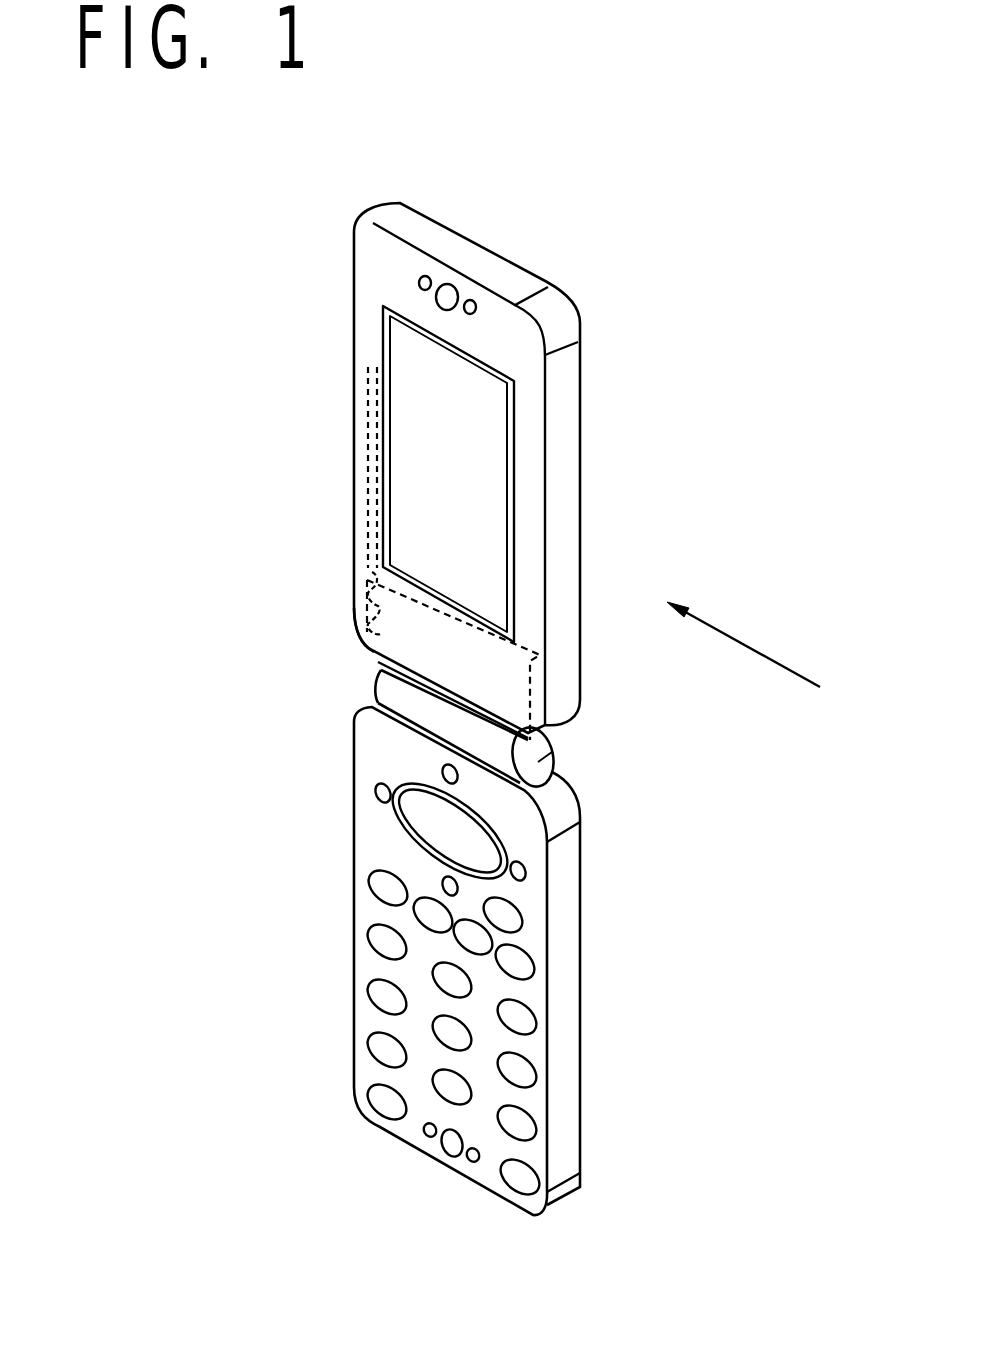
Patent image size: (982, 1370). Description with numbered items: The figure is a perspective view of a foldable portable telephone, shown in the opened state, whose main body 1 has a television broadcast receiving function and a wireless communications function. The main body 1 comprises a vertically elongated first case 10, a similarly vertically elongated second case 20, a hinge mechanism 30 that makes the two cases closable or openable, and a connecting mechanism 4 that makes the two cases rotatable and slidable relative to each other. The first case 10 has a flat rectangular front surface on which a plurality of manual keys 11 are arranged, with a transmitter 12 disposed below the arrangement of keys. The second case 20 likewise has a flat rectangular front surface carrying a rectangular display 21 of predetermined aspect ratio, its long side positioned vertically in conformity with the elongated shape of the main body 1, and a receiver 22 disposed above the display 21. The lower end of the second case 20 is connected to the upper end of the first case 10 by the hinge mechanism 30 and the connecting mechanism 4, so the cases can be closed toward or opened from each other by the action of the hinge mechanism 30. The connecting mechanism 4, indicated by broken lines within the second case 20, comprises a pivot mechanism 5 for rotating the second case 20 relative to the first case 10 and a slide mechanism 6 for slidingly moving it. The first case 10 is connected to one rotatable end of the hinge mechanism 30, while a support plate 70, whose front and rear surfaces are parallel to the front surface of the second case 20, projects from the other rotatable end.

The main body 1 is at (229, 203).
The connecting mechanism 4 is at (237, 505).
The pivot mechanism 5 is at (362, 600).
The slide mechanism 6 is at (373, 443).
The first case 10 is at (567, 960).
The manual keys 11 is at (517, 1017).
The transmitter 12 is at (452, 1143).
The second case 20 is at (565, 522).
The display 21 is at (487, 462).
The receiver 22 is at (447, 297).
The hinge mechanism 30 is at (540, 758).
The support plate 70 is at (362, 652).